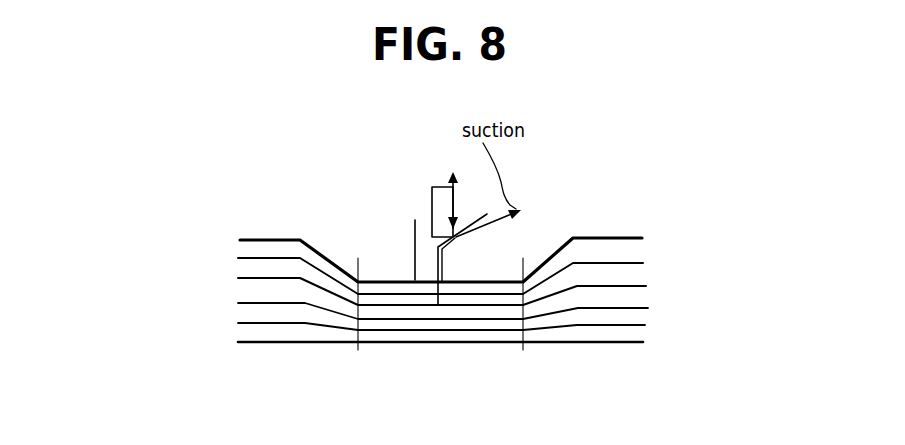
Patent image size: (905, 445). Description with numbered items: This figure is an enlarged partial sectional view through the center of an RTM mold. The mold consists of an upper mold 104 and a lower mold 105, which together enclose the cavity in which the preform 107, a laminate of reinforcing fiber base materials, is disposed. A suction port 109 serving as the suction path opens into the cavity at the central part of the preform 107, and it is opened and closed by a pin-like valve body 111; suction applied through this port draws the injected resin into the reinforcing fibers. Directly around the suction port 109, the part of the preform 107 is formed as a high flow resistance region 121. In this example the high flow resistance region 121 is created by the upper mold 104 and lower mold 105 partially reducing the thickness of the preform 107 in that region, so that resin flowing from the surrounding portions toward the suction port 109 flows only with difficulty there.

The upper mold 104 is at (483, 245).
The lower mold 105 is at (483, 358).
The preform 107 is at (233, 250).
The suction port 109 is at (414, 267).
The valve body 111 is at (432, 188).
The high flow resistance region 121 is at (522, 357).